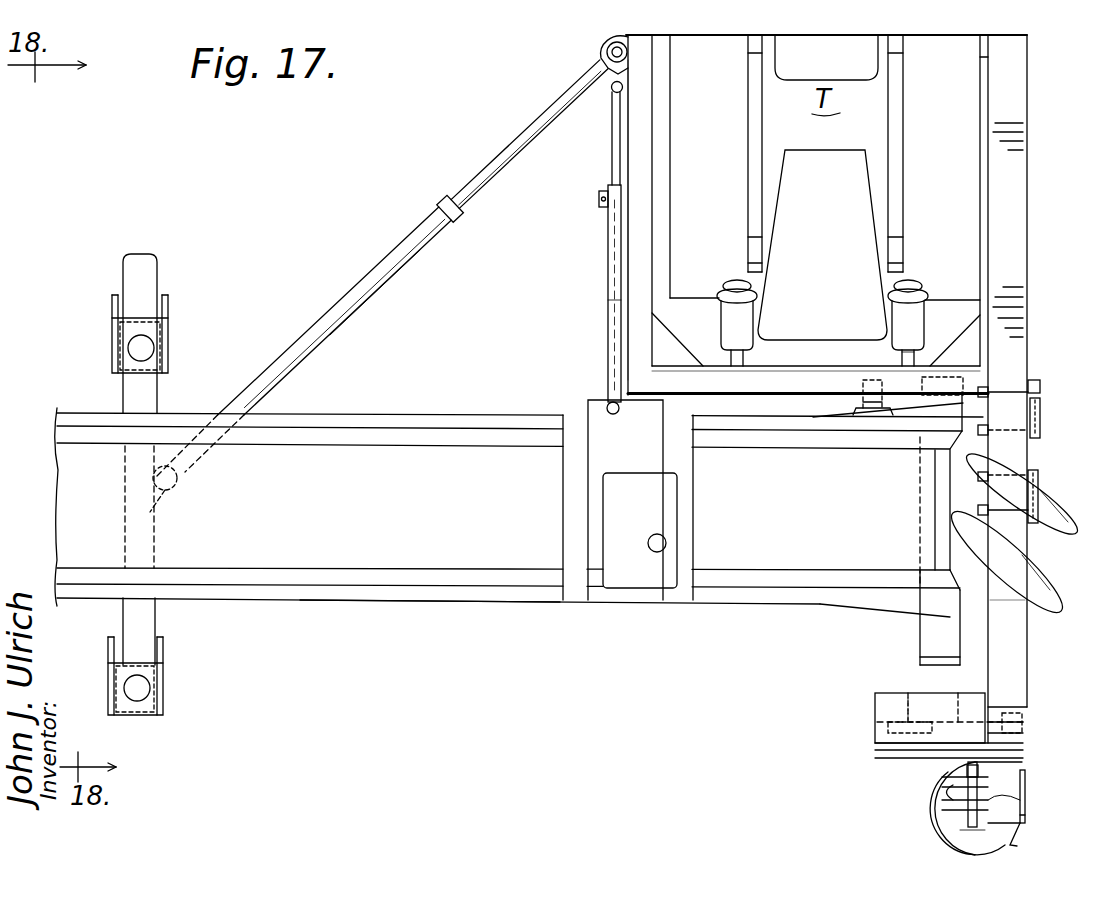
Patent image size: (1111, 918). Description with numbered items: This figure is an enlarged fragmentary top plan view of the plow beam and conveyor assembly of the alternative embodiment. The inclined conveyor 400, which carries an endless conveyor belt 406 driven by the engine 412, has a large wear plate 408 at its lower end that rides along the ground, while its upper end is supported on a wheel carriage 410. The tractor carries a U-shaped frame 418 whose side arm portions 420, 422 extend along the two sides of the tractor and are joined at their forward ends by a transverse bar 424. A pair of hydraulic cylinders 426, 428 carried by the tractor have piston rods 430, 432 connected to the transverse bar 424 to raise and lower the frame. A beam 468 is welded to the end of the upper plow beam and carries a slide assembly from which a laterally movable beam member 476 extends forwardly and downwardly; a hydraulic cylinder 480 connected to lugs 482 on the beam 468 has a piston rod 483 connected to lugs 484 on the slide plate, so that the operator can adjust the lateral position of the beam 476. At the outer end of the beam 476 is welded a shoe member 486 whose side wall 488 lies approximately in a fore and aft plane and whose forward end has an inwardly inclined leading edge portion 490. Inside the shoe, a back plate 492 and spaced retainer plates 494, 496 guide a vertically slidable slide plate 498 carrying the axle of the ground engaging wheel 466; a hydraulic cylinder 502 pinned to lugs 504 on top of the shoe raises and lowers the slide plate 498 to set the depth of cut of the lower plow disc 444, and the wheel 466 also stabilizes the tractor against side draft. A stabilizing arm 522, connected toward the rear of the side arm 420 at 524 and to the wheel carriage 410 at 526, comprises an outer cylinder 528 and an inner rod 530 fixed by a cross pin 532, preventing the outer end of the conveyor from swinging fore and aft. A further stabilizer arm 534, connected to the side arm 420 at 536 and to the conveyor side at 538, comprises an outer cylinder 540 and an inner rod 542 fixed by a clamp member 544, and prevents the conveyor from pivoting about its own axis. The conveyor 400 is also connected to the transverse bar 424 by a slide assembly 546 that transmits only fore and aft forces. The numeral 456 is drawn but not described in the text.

The conveyor 400 is at (482, 618).
The endless conveyor belt 406 is at (490, 510).
The wear plate 408 is at (925, 655).
The wheel carriage 410 is at (177, 345).
The engine 412 is at (660, 525).
The U-shaped frame 418 is at (1030, 152).
The side arm portion 420 is at (640, 227).
The side arm portion 422 is at (1013, 218).
The transverse bar 424 is at (812, 348).
The hydraulic cylinder 426 is at (722, 318).
The hydraulic cylinder 428 is at (927, 322).
The piston rod 430 is at (730, 367).
The piston rod 432 is at (903, 356).
The lower plow disc 444 is at (1055, 498).
The cutter blade 456 is at (1048, 587).
The ground engaging wheel 466 is at (920, 805).
The beam 468 is at (1008, 653).
The beam member 476 is at (1012, 755).
The hydraulic cylinder 480 is at (955, 712).
The lugs 482 is at (1028, 714).
The piston rod 483 is at (908, 695).
The lugs 484 is at (880, 725).
The shoe member 486 is at (1026, 776).
The side wall 488 is at (1025, 800).
The leading edge portion 490 is at (1017, 845).
The back plate 492 is at (1016, 728).
The retainer plate 494 is at (933, 772).
The retainer plate 496 is at (978, 820).
The slide plate 498 is at (1020, 823).
The hydraulic cylinder 502 is at (942, 792).
The lugs 504 is at (957, 807).
The stabilizing arm 522 is at (344, 296).
The connection 524 is at (605, 53).
The connection 526 is at (177, 488).
The outer cylinder 528 is at (376, 285).
The inner rod 530 is at (503, 162).
The cross pin 532 is at (446, 208).
The stabilizer arm 534 is at (606, 272).
The connection 536 is at (613, 92).
The connection 538 is at (610, 403).
The outer cylinder 540 is at (607, 308).
The inner rod 542 is at (612, 163).
The clamp member 544 is at (599, 200).
The slide assembly 546 is at (845, 397).